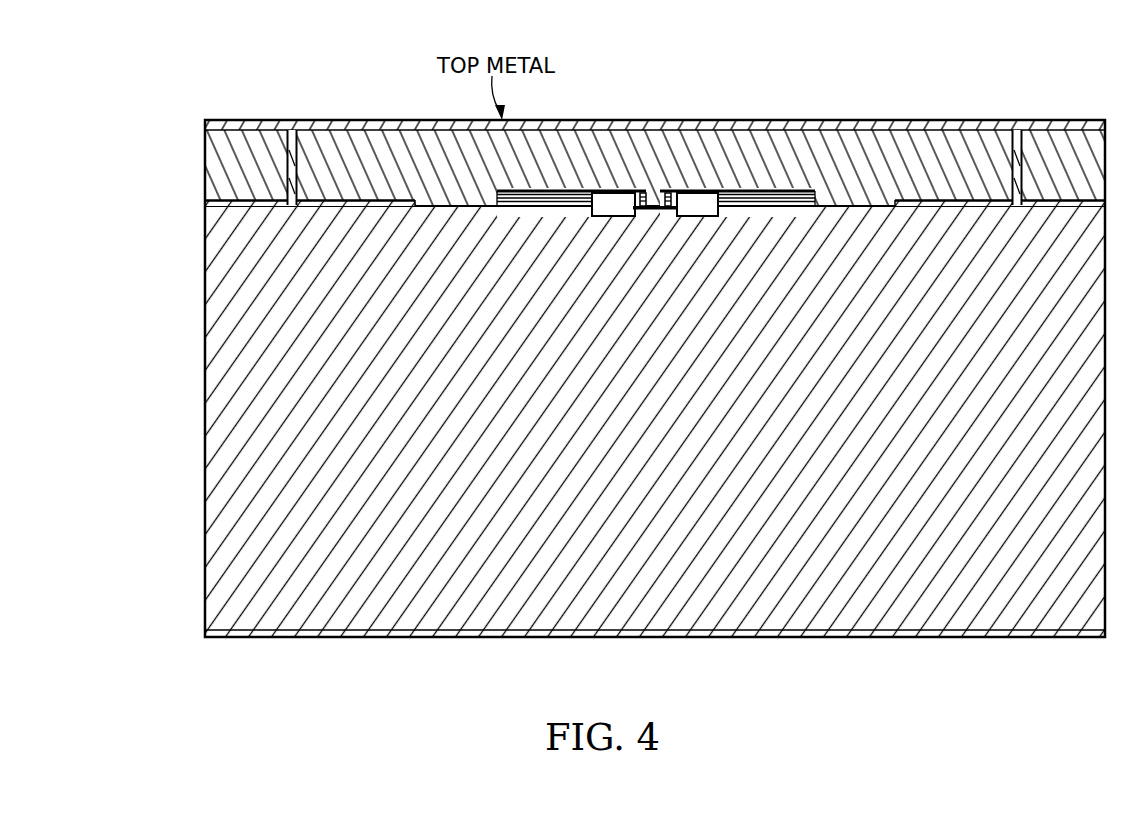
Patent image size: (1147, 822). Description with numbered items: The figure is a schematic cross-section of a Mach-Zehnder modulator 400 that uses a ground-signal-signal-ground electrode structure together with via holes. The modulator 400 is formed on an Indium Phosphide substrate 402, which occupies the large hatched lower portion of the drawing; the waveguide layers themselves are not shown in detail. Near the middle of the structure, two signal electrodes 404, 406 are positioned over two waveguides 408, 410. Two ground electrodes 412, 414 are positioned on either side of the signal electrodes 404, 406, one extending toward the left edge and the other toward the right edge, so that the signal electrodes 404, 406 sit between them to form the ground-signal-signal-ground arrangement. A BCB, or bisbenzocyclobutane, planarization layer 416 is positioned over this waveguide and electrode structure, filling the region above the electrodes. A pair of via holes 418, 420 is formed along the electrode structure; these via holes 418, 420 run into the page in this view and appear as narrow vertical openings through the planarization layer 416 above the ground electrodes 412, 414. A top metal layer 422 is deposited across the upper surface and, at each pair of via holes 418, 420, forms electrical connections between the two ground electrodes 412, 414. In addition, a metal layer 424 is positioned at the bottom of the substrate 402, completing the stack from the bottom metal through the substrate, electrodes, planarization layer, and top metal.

The Mach-Zehnder modulator 400 is at (137, 35).
The Indium Phosphide substrate 402 is at (272, 402).
The signal electrode 404 is at (546, 190).
The signal electrode 406 is at (765, 190).
The waveguide 408 is at (642, 210).
The waveguide 410 is at (666, 190).
The ground electrode 412 is at (338, 208).
The ground electrode 414 is at (970, 208).
The BCB planarization layer 416 is at (225, 170).
The via hole 418 is at (298, 166).
The via hole 420 is at (1012, 168).
The top metal layer 422 is at (656, 119).
The metal layer 424 is at (654, 640).